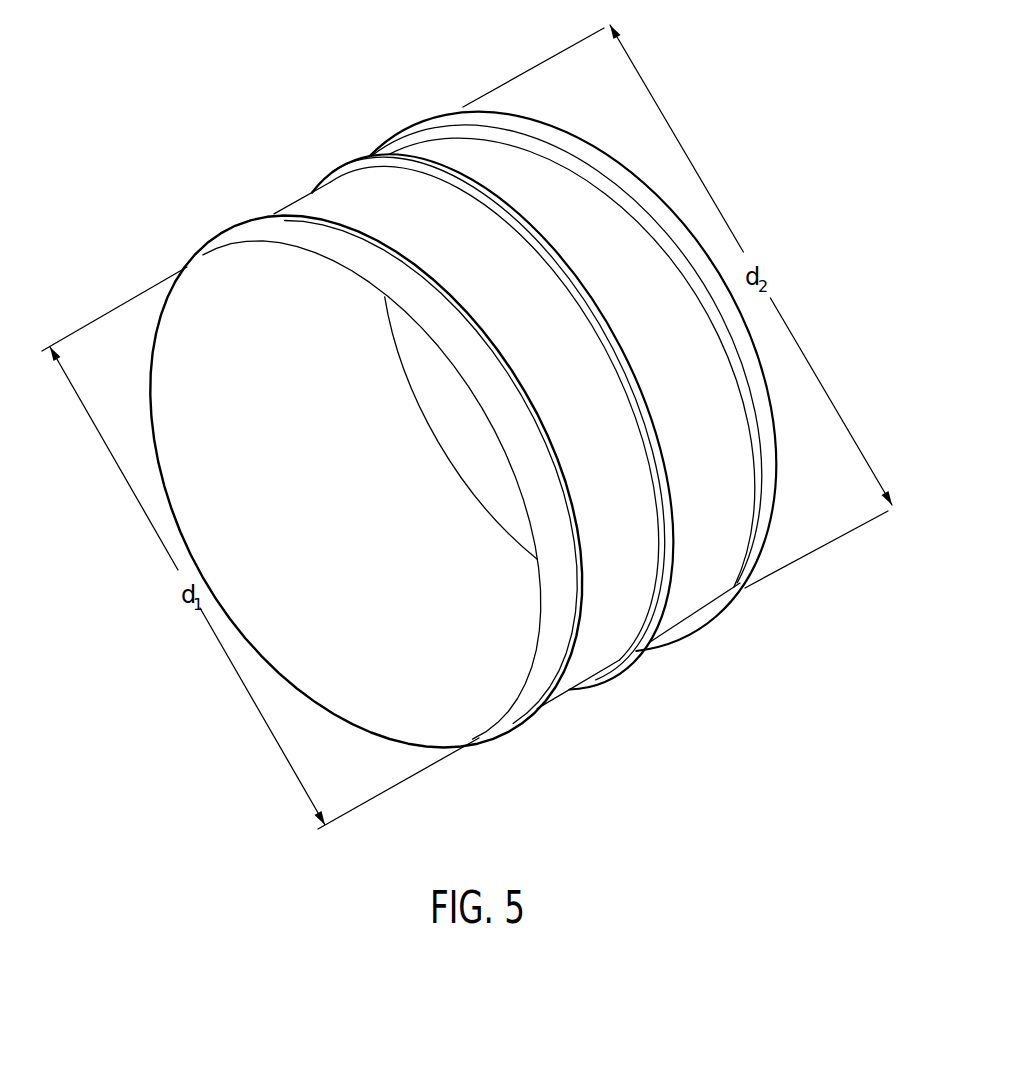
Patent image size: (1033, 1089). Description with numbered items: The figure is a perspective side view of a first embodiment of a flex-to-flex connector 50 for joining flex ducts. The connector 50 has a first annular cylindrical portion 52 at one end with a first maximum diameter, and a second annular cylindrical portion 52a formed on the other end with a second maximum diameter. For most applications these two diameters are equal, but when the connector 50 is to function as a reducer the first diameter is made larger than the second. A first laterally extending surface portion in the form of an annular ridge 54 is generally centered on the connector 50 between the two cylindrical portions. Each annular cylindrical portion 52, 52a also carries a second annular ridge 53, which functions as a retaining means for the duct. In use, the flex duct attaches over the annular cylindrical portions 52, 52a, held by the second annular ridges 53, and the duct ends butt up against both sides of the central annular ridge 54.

The flex-to-flex connector 50 is at (465, 411).
The first annular cylindrical portion 52 is at (317, 207).
The second annular cylindrical portion 52a is at (600, 247).
The second annular ridge 53 is at (533, 717).
The annular ridge 54 is at (618, 673).